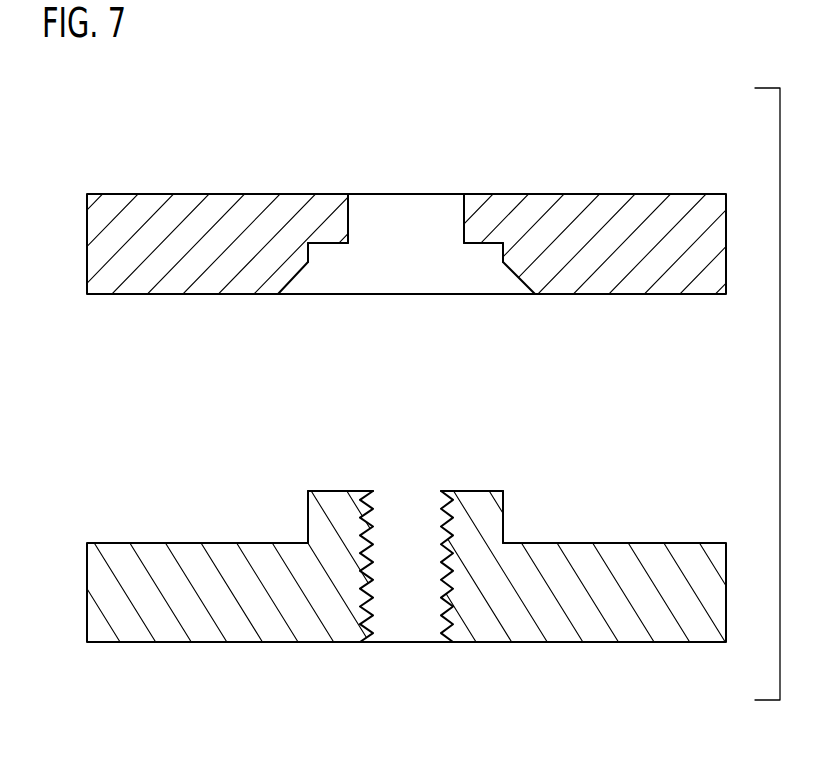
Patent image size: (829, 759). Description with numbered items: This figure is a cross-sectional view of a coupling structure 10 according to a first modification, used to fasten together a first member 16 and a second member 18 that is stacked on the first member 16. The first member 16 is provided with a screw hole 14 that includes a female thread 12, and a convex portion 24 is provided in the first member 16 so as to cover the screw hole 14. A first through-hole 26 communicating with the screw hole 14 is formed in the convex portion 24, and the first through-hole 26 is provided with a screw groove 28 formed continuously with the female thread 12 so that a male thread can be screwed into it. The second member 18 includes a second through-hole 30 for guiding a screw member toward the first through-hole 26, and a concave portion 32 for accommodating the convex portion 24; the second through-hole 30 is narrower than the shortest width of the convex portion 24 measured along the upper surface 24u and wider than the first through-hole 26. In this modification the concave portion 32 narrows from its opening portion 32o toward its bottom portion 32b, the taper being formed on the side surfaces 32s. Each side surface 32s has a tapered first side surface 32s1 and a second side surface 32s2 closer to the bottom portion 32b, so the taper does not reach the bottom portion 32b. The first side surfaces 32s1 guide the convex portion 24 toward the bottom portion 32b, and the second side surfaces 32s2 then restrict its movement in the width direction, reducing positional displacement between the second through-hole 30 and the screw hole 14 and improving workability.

The coupling structure 10 is at (139, 182).
The second member 18 is at (86, 214).
The first member 16 is at (86, 563).
The second through-hole 30 is at (463, 210).
The concave portion 32 is at (408, 237).
The opening portion 32o is at (401, 312).
The bottom portion 32b is at (490, 247).
The side surfaces 32s is at (408, 202).
The first side surface 32s1 is at (286, 285).
The second side surface 32s2 is at (308, 258).
The convex portion 24 is at (405, 471).
The upper surface 24u is at (333, 486).
The first through-hole 26 is at (422, 486).
The screw groove 28 is at (371, 517).
The female thread 12 is at (369, 631).
The screw hole 14 is at (406, 551).